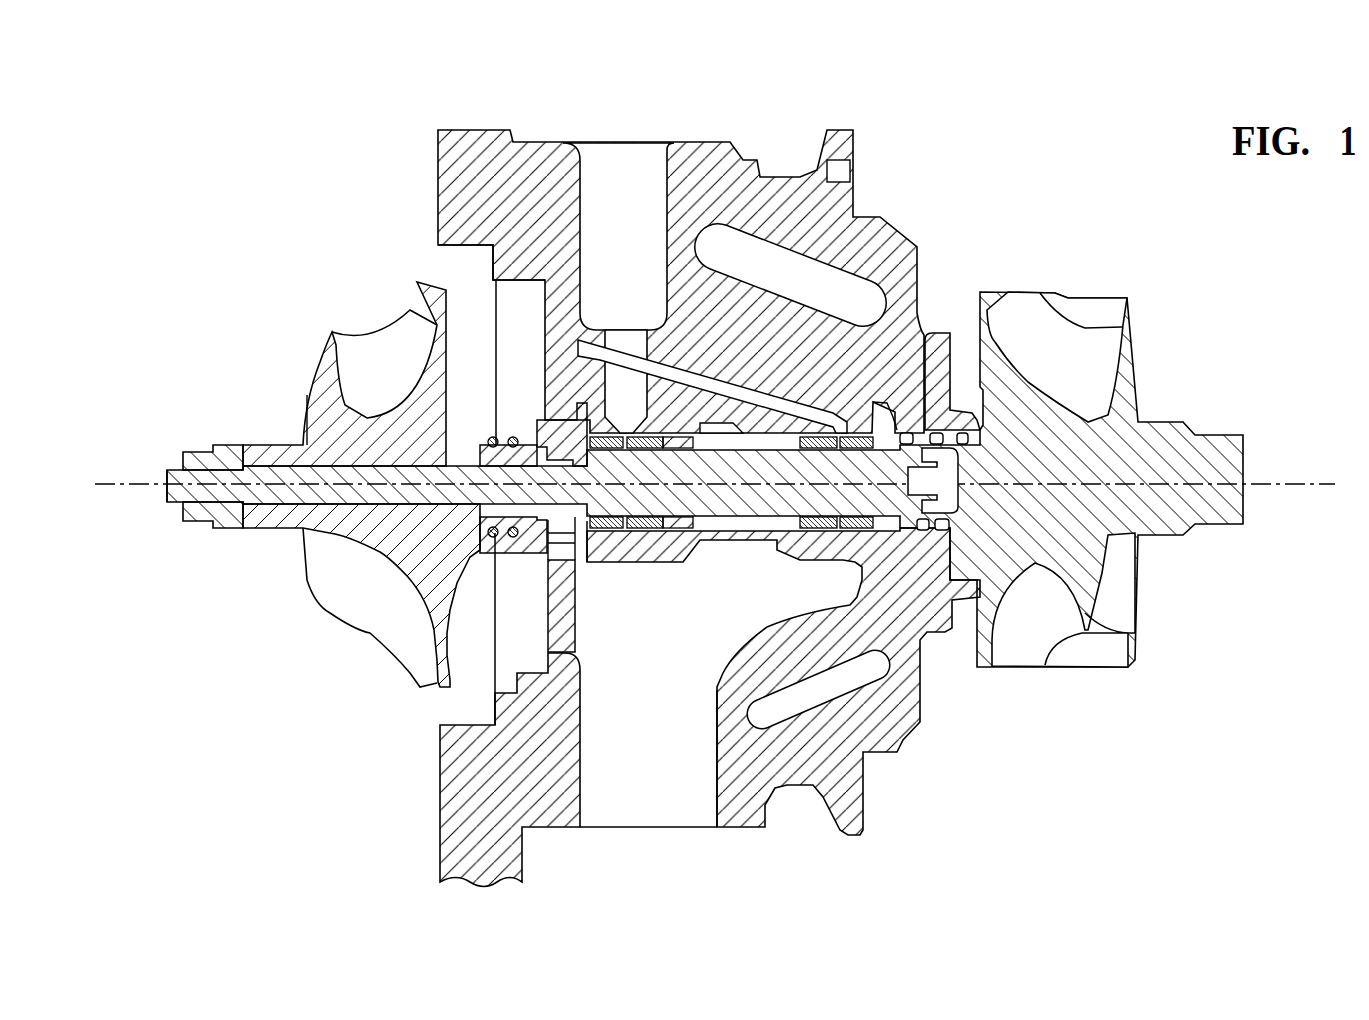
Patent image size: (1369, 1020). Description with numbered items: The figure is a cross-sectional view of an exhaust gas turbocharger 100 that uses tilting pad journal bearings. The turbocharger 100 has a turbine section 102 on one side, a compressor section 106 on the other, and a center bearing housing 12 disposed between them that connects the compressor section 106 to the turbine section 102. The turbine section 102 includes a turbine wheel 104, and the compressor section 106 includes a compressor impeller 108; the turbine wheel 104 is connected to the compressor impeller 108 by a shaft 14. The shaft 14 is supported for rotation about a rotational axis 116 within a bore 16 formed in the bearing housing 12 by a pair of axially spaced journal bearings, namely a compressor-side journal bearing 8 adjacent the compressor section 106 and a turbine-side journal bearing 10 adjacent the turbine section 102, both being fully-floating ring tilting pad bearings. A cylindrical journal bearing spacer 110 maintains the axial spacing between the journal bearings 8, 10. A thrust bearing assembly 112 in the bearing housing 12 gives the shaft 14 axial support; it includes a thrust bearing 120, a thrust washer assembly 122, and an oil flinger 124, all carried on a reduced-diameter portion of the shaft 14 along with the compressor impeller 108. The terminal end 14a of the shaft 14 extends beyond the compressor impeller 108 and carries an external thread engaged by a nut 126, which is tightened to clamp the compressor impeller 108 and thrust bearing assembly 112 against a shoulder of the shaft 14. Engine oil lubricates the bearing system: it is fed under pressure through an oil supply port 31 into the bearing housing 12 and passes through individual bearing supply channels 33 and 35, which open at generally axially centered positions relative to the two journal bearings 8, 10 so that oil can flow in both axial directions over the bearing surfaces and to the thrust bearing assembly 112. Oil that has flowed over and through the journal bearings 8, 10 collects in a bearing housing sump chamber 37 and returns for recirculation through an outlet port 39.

The exhaust gas turbocharger 100 is at (678, 479).
The turbine section 102 is at (930, 212).
The turbine wheel 104 is at (1118, 425).
The compressor section 106 is at (361, 476).
The compressor impeller 108 is at (327, 380).
The journal bearing spacer 110 is at (758, 536).
The thrust bearing assembly 112 is at (424, 569).
The rotational axis 116 is at (1265, 465).
The thrust bearing 120 is at (567, 632).
The thrust washer assembly 122 is at (563, 537).
The oil flinger 124 is at (493, 537).
The nut 126 is at (200, 452).
The center bearing housing 12 is at (555, 165).
The shaft 14 is at (705, 479).
The terminal end 14a is at (165, 490).
The bore 16 is at (933, 333).
The oil supply port 31 is at (653, 148).
The bearing supply channel 33 is at (631, 420).
The bearing supply channel 35 is at (753, 400).
The bearing housing sump chamber 37 is at (641, 698).
The outlet port 39 is at (717, 810).
The compressor-side journal bearing 8 is at (598, 537).
The turbine-side journal bearing 10 is at (857, 540).